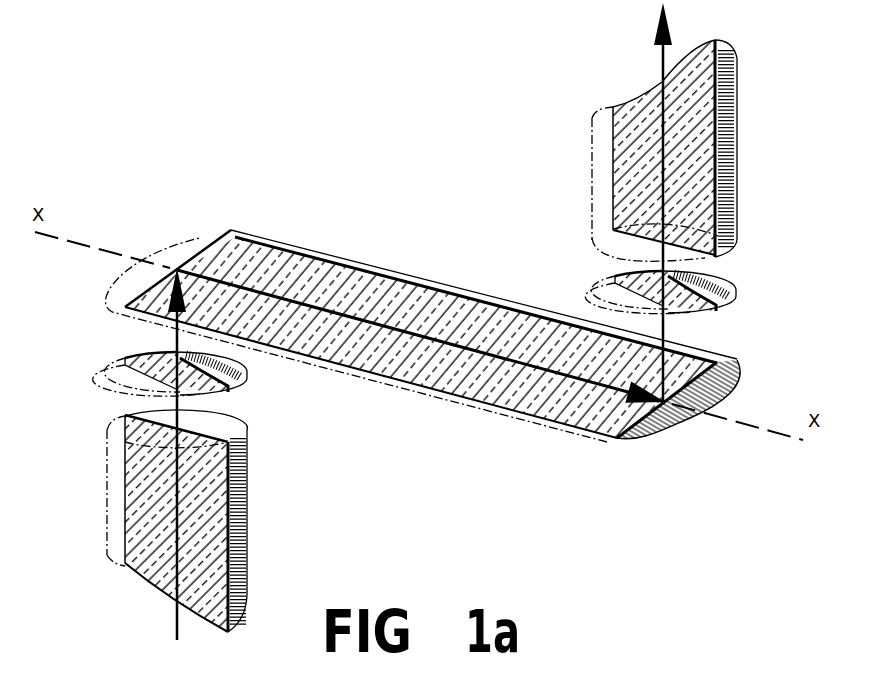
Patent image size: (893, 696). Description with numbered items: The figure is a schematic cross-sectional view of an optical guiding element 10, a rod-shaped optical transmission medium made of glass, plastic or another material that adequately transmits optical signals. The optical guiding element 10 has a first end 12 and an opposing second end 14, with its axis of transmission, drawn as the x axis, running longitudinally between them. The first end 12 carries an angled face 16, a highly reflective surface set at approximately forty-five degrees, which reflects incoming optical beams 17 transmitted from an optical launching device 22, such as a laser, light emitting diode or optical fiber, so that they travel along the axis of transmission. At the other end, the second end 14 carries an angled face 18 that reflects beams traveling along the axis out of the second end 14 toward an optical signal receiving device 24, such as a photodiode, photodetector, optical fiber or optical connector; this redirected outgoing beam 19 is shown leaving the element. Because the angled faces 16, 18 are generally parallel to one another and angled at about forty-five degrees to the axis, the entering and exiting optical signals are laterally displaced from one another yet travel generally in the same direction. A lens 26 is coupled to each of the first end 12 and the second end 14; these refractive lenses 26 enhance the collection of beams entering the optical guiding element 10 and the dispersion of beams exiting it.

The optical guiding element 10 is at (430, 270).
The first end 12 is at (252, 229).
The second end 14 is at (713, 354).
The angled face 16 is at (194, 253).
The incoming optical beams 17 is at (165, 638).
The angled face 18 is at (663, 408).
The redirected outgoing beam 19 is at (653, 62).
The optical launching device 22 is at (138, 482).
The optical signal receiving device 24 is at (733, 160).
The lens 26 is at (137, 355).